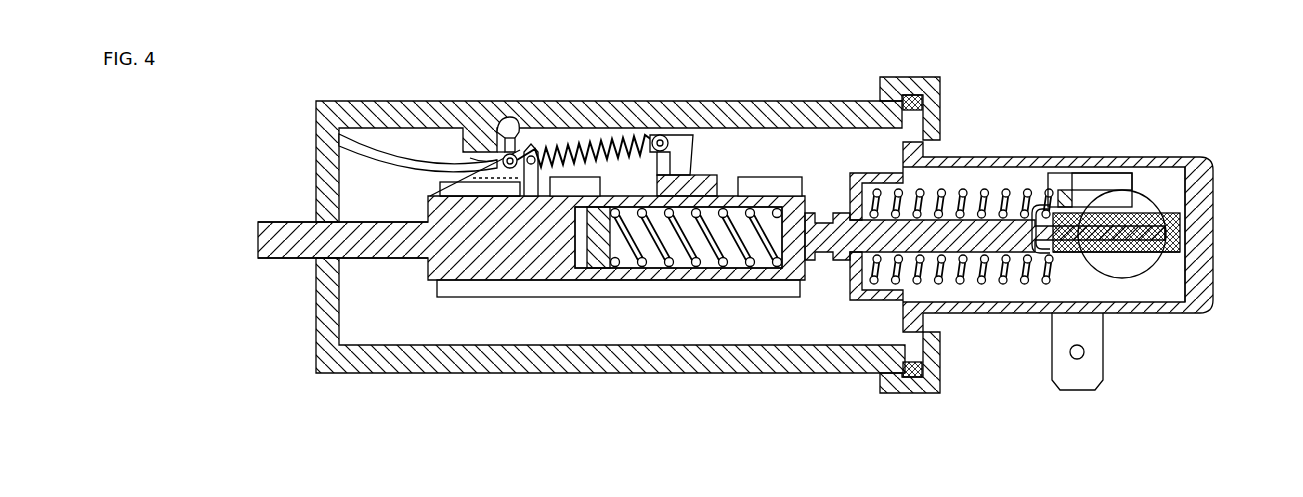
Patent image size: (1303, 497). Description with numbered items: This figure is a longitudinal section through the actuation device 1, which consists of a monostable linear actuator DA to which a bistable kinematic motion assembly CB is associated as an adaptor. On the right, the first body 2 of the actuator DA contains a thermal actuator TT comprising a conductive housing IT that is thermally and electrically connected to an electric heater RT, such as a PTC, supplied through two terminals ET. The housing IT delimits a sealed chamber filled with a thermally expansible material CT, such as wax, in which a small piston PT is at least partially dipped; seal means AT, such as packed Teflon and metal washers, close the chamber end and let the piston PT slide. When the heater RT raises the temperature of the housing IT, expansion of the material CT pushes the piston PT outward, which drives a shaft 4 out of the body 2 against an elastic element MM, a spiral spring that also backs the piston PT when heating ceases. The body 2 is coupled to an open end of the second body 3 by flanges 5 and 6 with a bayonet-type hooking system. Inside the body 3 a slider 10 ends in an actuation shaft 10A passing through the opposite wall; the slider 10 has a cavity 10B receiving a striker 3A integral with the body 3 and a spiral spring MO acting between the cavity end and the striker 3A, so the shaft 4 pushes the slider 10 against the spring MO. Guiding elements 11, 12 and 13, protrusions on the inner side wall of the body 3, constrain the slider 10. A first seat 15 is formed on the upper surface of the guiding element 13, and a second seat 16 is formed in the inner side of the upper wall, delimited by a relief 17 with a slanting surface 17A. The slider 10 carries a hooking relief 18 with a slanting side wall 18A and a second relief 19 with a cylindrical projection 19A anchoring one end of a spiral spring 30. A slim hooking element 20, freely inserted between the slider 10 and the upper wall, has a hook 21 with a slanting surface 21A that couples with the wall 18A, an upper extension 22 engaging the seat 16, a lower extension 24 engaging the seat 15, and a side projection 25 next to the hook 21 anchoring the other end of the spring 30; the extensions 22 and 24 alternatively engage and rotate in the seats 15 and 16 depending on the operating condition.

The actuation device 1 is at (240, 387).
The first body 2 is at (1045, 157).
The second body 3 is at (418, 373).
The striker 3A is at (597, 270).
The shaft 4 is at (1010, 262).
The flange 5 is at (912, 104).
The flange 6 is at (940, 80).
The slider 10 is at (421, 279).
The actuation shaft 10A is at (273, 256).
The cavity 10B is at (738, 265).
The guiding element 11 is at (782, 292).
The guiding element 12 is at (812, 120).
The guiding element 13 is at (520, 172).
The first seat 15 is at (536, 195).
The second seat 16 is at (520, 128).
The relief 17 is at (472, 147).
The slanting surface 17A is at (412, 162).
The hooking relief 18 is at (702, 176).
The slanting side wall 18A is at (770, 178).
The second relief 19 is at (490, 176).
The projection 19A is at (508, 152).
The hooking element 20 is at (632, 181).
The hook 21 is at (692, 130).
The slanting surface 21A is at (684, 143).
The upper extension 22 is at (503, 125).
The lower extension 24 is at (525, 197).
The side projection 25 is at (660, 134).
The spiral spring 30 is at (552, 147).
The bistable kinematic motion assembly CB is at (515, 387).
The spiral spring MO is at (688, 252).
The elastic element MM is at (975, 283).
The linear actuator DA is at (1015, 140).
The seal means AT is at (1057, 218).
The small piston PT is at (1115, 235).
The thermal actuator TT is at (1173, 287).
The electric heater RT is at (1127, 265).
The thermally expansible material CT is at (1168, 228).
The housing IT is at (1195, 186).
The terminals ET is at (1093, 370).